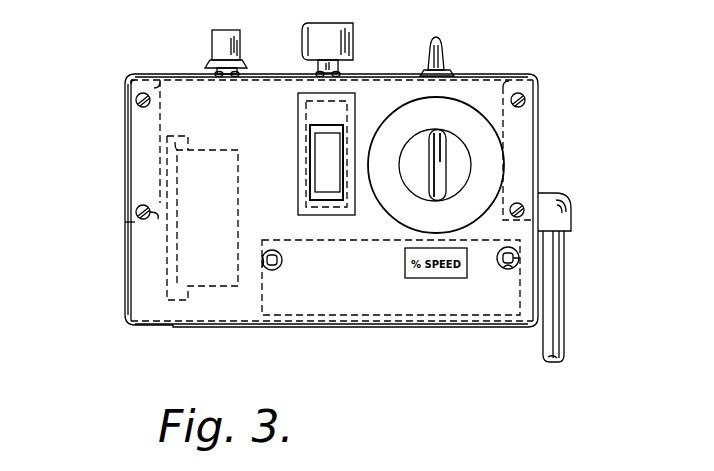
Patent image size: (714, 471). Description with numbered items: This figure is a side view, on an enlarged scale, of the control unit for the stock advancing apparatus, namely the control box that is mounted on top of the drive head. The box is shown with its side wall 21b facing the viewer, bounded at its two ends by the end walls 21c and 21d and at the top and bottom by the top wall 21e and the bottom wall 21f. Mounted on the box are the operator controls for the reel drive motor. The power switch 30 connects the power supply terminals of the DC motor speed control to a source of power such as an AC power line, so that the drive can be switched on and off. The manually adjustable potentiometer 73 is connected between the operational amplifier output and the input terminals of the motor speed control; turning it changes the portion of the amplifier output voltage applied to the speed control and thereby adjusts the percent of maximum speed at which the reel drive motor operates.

The side wall 21b is at (188, 98).
The end wall 21c is at (538, 138).
The end wall 21d is at (125, 268).
The top wall 21e is at (478, 75).
The bottom wall 21f is at (353, 328).
The power switch 30 is at (318, 157).
The manually adjustable potentiometer 73 is at (470, 130).